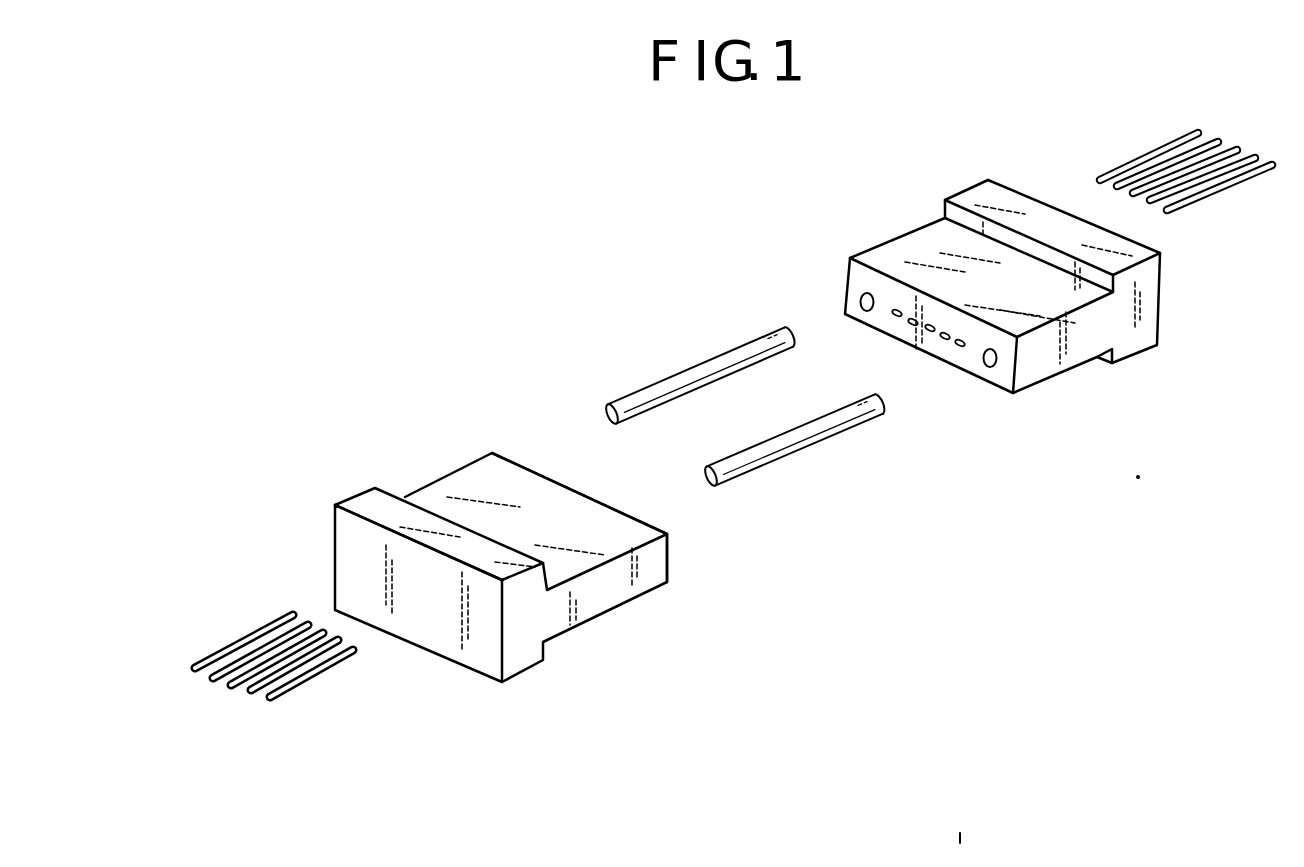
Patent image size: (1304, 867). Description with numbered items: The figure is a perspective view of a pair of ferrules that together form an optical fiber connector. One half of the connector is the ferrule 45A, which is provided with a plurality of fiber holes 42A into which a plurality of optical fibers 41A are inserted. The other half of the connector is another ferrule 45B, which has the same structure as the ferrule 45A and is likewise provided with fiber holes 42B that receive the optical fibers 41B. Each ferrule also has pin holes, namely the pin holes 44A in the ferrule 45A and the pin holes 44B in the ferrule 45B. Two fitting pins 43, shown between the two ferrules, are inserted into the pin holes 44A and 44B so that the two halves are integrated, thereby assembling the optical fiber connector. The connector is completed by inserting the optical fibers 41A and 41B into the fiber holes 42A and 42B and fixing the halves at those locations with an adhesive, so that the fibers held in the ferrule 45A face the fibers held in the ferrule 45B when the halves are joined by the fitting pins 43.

The optical fibers 41A is at (1143, 165).
The optical fibers 41B is at (329, 679).
The fiber holes 42A is at (930, 325).
The fiber holes 42B is at (630, 505).
The fitting pins 43 is at (670, 385).
The pin holes 44A is at (851, 298).
The pin holes 44B is at (528, 466).
The ferrule 45A is at (1078, 372).
The ferrule 45B is at (635, 611).